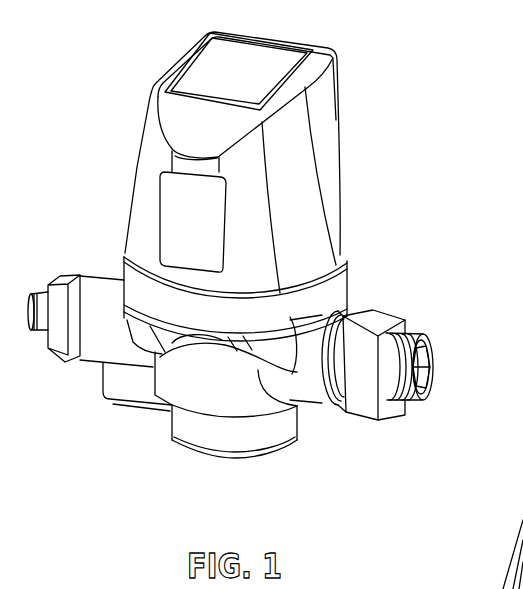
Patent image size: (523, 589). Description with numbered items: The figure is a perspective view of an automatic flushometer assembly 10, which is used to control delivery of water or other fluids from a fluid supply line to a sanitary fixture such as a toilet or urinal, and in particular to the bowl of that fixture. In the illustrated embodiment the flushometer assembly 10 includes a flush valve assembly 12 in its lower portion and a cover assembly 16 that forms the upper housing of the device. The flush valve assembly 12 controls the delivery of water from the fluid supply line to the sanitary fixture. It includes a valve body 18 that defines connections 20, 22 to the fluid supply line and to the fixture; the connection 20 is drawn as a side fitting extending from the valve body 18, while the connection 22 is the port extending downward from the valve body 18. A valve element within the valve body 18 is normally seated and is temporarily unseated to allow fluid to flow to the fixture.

The automatic flushometer assembly 10 is at (122, 75).
The flush valve assembly 12 is at (167, 465).
The cover assembly 16 is at (356, 117).
The valve body 18 is at (200, 377).
The connection 20 is at (427, 341).
The connection 22 is at (228, 435).